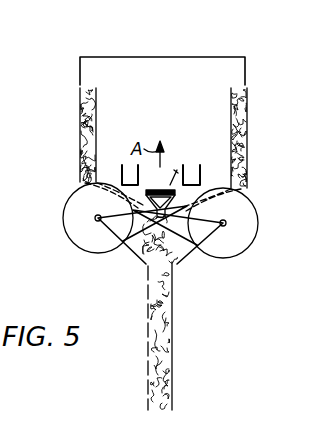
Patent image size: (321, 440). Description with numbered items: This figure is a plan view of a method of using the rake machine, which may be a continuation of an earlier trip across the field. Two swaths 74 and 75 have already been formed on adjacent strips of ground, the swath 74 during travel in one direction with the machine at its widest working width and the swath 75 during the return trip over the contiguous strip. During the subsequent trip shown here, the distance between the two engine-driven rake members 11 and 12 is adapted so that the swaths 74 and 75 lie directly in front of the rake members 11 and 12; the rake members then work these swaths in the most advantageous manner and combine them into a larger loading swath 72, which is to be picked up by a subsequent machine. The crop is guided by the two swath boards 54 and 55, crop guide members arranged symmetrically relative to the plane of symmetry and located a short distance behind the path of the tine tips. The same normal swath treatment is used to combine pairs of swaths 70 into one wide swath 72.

The swaths 70 is at (166, 57).
The swath 74 is at (79, 139).
The swath 75 is at (230, 117).
The loading swath 72 is at (146, 398).
The rake member 11 is at (78, 248).
The rake member 12 is at (228, 260).
The swath board 54 is at (138, 257).
The swath board 55 is at (185, 257).